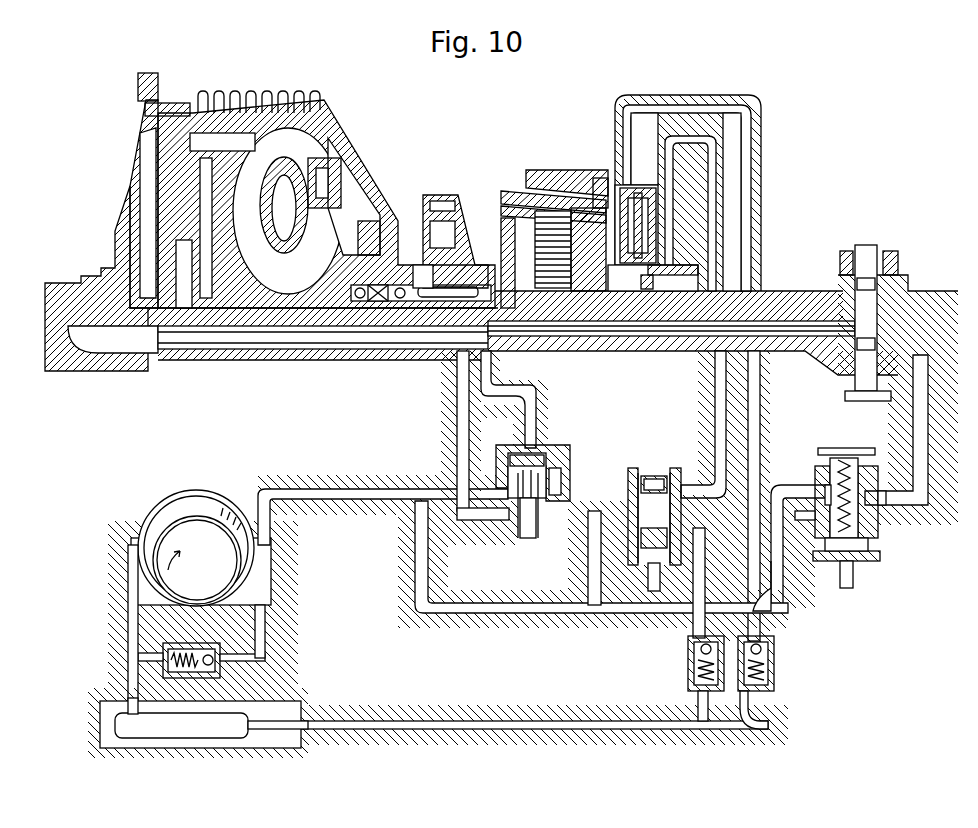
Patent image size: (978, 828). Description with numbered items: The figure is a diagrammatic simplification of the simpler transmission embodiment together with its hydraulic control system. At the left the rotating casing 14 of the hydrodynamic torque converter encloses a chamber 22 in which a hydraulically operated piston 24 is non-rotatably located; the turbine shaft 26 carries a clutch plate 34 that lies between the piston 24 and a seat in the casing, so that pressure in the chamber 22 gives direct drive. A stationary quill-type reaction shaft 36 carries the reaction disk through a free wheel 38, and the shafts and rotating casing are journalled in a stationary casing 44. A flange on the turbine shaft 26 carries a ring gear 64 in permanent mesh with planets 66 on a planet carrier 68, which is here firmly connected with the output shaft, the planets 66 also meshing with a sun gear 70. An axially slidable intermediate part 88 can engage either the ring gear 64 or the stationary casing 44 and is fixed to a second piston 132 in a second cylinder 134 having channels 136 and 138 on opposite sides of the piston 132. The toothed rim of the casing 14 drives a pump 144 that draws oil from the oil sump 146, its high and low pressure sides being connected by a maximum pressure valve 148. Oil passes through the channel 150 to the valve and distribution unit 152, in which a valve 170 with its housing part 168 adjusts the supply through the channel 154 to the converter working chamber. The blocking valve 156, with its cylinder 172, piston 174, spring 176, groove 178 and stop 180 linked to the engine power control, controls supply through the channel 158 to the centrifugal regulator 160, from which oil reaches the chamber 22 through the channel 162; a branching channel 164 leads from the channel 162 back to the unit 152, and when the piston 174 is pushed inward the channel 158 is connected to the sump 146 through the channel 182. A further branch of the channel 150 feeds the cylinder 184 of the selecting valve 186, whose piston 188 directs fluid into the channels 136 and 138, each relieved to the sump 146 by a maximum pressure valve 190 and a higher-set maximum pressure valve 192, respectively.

The rotating casing 14 is at (334, 114).
The chamber 22 is at (168, 250).
The hydraulically operated piston 24 is at (148, 198).
The turbine shaft 26 is at (262, 341).
The clutch plate 34 is at (225, 295).
The reaction shaft 36 is at (412, 292).
The free wheel 38 is at (357, 295).
The stationary casing 44 is at (530, 162).
The ring gear 64 is at (496, 185).
The planets 66 is at (496, 203).
The planet carrier 68 is at (500, 225).
The sun gear 70 is at (518, 328).
The intermediate part 88 is at (585, 172).
The second piston 132 is at (610, 185).
The second cylinder 134 is at (665, 258).
The channel 136 is at (680, 133).
The channel 138 is at (720, 100).
The pump 144 is at (440, 195).
The oil sump 146 is at (218, 722).
The maximum pressure valve 148 is at (210, 665).
The channel 150 is at (280, 486).
The valve and distribution unit 152 is at (576, 428).
The channel 154 is at (448, 407).
The blocking valve 156 is at (907, 546).
The channel 158 is at (920, 488).
The centrifugal regulator 160 is at (866, 243).
The channel 162 is at (568, 335).
The branching channel 164 is at (485, 375).
The valve body 168 is at (550, 468).
The valve 170 is at (522, 505).
The cylinder 172 is at (850, 555).
The piston 174 is at (862, 522).
The spring 176 is at (855, 447).
The groove 178 is at (893, 480).
The stop 180 is at (848, 445).
The channel 182 is at (797, 512).
The cylinder 184 is at (628, 520).
The selecting valve 186 is at (650, 470).
The piston 188 is at (628, 470).
The maximum pressure valve 190 is at (690, 640).
The maximum pressure valve 192 is at (765, 640).